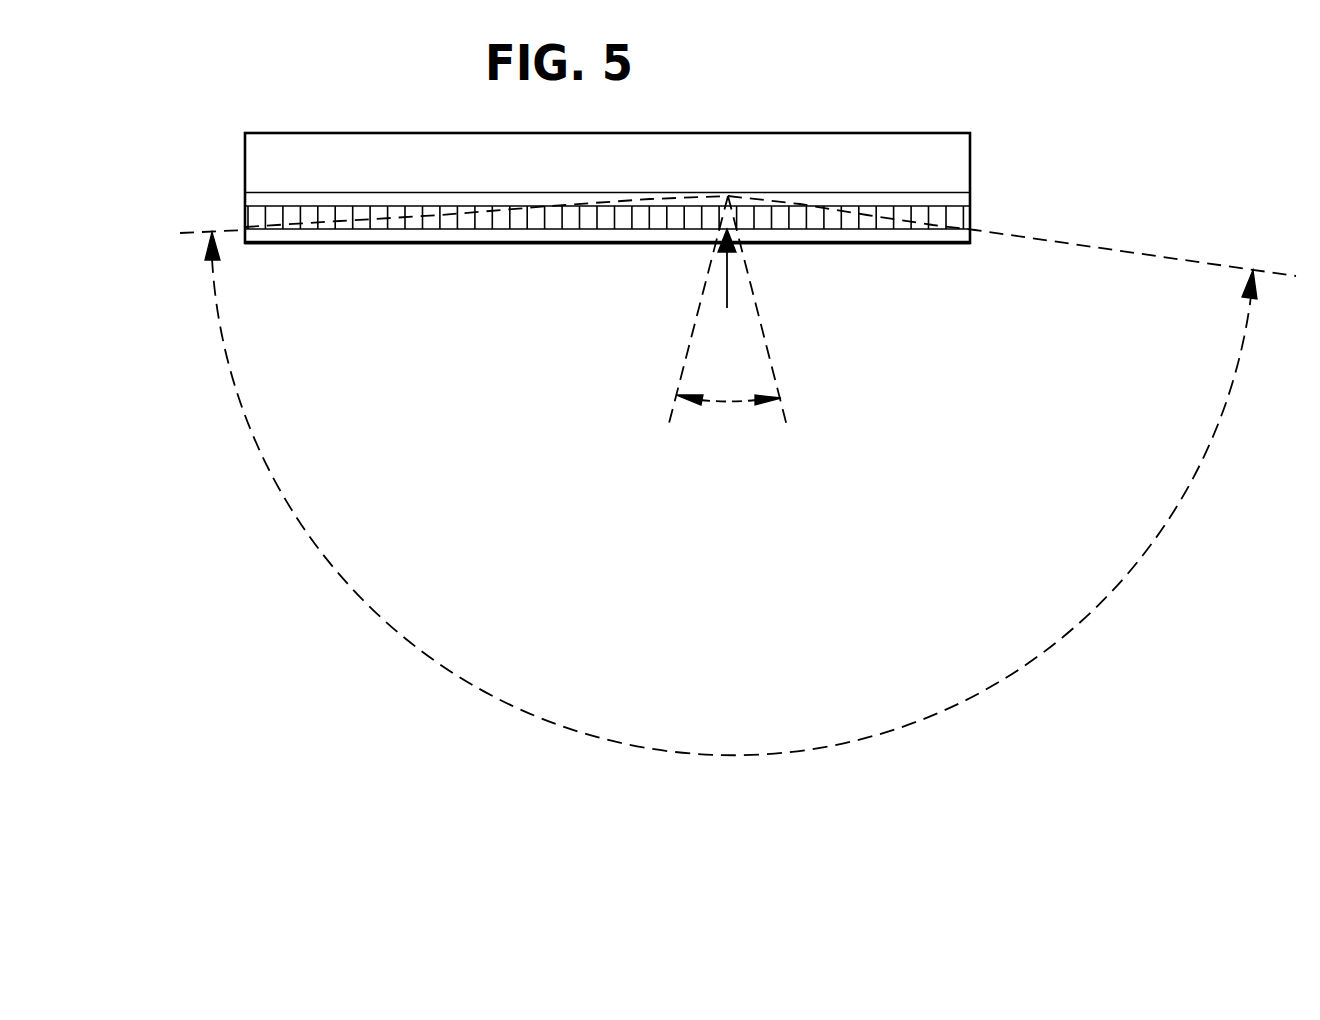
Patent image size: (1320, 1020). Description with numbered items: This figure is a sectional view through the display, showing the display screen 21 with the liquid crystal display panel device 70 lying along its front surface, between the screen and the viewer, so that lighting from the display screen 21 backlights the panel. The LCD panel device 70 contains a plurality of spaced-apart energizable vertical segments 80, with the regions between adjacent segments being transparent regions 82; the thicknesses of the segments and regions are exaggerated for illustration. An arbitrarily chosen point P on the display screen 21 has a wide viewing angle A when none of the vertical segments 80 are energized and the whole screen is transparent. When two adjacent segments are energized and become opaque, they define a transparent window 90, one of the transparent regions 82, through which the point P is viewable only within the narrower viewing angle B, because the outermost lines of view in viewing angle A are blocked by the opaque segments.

The display screen 21 is at (967, 161).
The liquid crystal display (LCD) panel device 70 is at (975, 193).
The energizable vertical segments 80 is at (511, 231).
The transparent regions 82 is at (275, 213).
The transparent window 90 is at (726, 283).
The point P is at (728, 196).
The viewing angle A is at (968, 680).
The viewing angle B is at (731, 404).